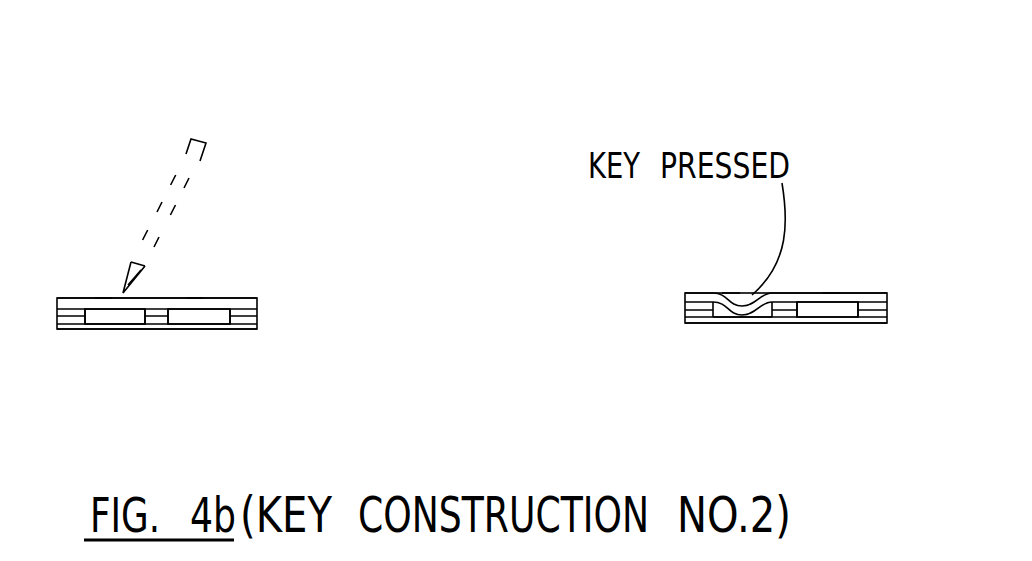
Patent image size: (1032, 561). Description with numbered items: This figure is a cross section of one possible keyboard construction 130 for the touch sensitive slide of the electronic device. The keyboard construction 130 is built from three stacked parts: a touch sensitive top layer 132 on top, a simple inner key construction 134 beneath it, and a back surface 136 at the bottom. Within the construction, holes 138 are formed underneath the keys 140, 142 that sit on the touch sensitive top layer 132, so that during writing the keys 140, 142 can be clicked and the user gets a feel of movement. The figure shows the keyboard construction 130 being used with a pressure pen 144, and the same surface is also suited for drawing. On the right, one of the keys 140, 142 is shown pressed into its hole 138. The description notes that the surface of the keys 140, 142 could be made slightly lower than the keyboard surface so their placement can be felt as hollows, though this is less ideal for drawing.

The keyboard construction 130 is at (100, 188).
The touch sensitive top layer 132 is at (257, 298).
The inner key construction 134 is at (257, 316).
The back surface 136 is at (257, 329).
The holes 138 is at (195, 317).
The key 140 is at (103, 297).
The key 142 is at (195, 295).
The pressure pen 144 is at (240, 190).